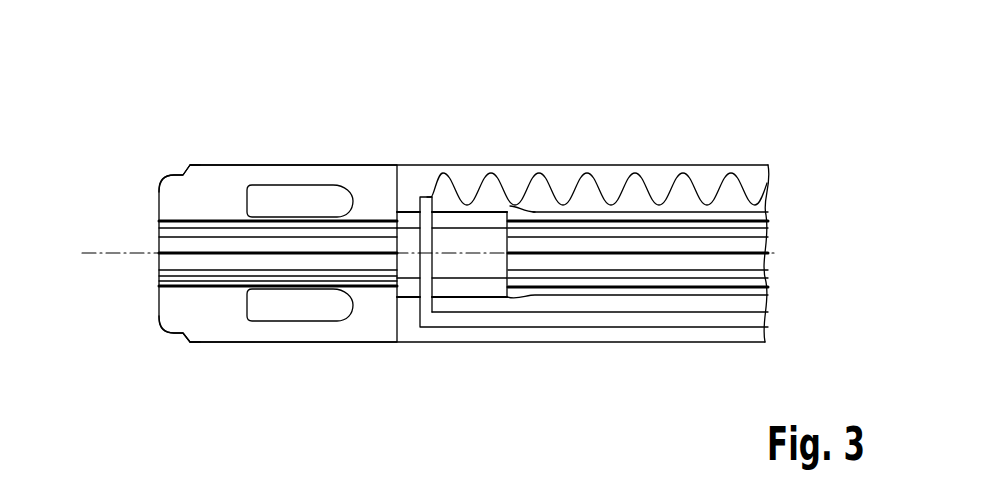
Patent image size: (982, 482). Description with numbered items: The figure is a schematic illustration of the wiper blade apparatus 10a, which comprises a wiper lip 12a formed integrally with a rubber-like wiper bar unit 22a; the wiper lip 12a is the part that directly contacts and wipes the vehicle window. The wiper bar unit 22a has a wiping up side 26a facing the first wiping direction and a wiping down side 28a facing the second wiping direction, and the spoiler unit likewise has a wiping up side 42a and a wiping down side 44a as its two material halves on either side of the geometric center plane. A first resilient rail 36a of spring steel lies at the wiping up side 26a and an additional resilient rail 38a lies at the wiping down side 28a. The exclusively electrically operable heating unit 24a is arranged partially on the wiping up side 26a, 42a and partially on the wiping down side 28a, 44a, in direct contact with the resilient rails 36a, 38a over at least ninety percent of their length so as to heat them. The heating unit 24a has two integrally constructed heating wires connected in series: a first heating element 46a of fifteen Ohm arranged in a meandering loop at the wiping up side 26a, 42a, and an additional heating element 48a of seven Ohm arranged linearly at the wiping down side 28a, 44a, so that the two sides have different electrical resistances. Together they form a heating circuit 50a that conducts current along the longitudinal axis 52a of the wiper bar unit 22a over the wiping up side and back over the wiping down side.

The wiper blade apparatus 10a is at (742, 127).
The wiper lip 12a is at (755, 137).
The wiper bar unit 22a is at (352, 245).
The heating unit 24a is at (513, 97).
The wiping up side 26a is at (129, 143).
The wiping up side 42a is at (159, 159).
The wiping down side 28a is at (129, 368).
The wiping down side 44a is at (159, 350).
The first resilient rail 36a is at (213, 193).
The additional resilient rail 38a is at (215, 318).
The first heating element 46a is at (607, 177).
The additional heating element 48a is at (562, 320).
The heating circuit 50a is at (427, 273).
The longitudinal axis 52a is at (113, 252).